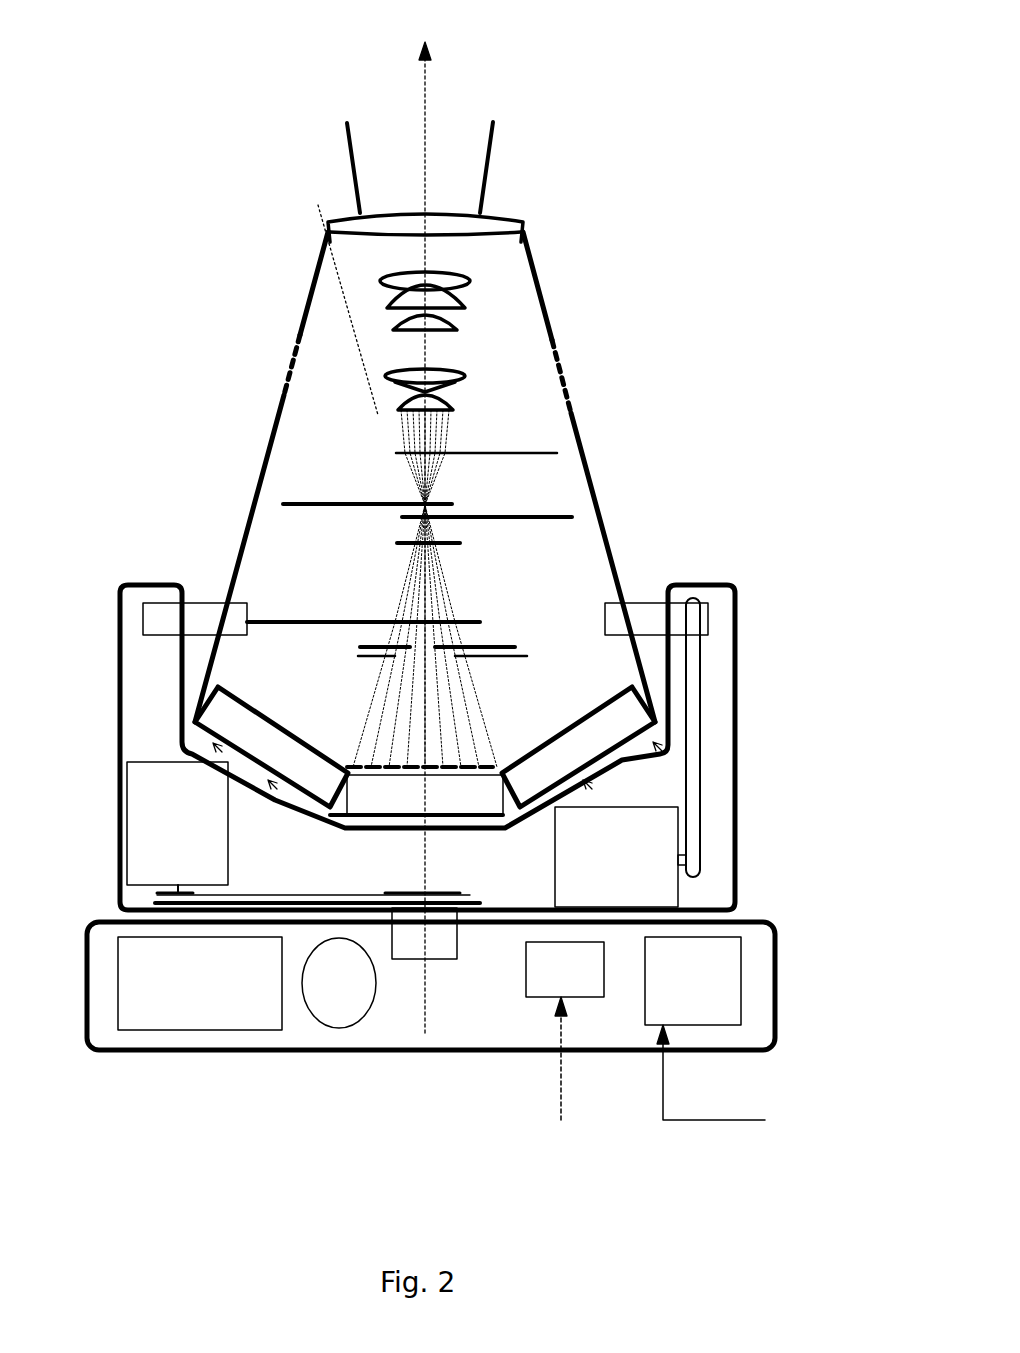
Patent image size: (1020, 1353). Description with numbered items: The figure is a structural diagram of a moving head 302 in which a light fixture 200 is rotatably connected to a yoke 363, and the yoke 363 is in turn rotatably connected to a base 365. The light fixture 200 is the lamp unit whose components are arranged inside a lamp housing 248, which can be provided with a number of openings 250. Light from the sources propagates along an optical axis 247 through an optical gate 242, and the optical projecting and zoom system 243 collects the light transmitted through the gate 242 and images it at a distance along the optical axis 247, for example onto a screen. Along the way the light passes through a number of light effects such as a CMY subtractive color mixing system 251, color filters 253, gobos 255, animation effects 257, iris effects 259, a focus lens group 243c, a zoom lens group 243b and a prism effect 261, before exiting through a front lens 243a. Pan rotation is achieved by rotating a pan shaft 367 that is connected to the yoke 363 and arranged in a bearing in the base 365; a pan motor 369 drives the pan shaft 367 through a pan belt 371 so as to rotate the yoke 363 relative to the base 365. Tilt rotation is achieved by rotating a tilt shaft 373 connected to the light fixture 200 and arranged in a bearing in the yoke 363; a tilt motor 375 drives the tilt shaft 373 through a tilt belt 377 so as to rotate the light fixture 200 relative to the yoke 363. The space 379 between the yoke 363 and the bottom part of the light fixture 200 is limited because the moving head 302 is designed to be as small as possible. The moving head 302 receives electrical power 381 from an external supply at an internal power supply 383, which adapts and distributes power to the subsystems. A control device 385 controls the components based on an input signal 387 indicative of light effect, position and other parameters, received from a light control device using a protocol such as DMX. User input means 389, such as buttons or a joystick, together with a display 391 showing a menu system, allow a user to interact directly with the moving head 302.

The moving head 302 is at (205, 116).
The light fixture 200 is at (542, 292).
The optical axis 247 is at (426, 88).
The optical projecting and zoom system 243 is at (344, 310).
The front lens 243a is at (377, 222).
The zoom lens group 243b is at (380, 273).
The focus lens group 243c is at (388, 378).
The openings 250 is at (291, 372).
The lamp housing 248 is at (583, 455).
The optical gate 242 is at (487, 490).
The prism effect 261 is at (476, 467).
The gobos 255 is at (367, 490).
The animation effects 257 is at (487, 531).
The iris effects 259 is at (407, 550).
The color filters 253 is at (363, 608).
The CMY subtractive color mixing system 251 is at (422, 651).
The yoke 363 is at (118, 648).
The tilt shaft 373 is at (425, 619).
The tilt belt 377 is at (700, 727).
The space 379 is at (220, 752).
The pan belt 371 is at (300, 896).
The pan motor 369 is at (177, 827).
The tilt motor 375 is at (616, 857).
The base 365 is at (245, 1050).
The display 391 is at (200, 983).
The user input means 389 is at (339, 983).
The pan shaft 367 is at (424, 933).
The internal power supply 383 is at (565, 969).
The control device 385 is at (693, 981).
The electrical power 381 is at (539, 1060).
The input signal 387 is at (711, 1073).